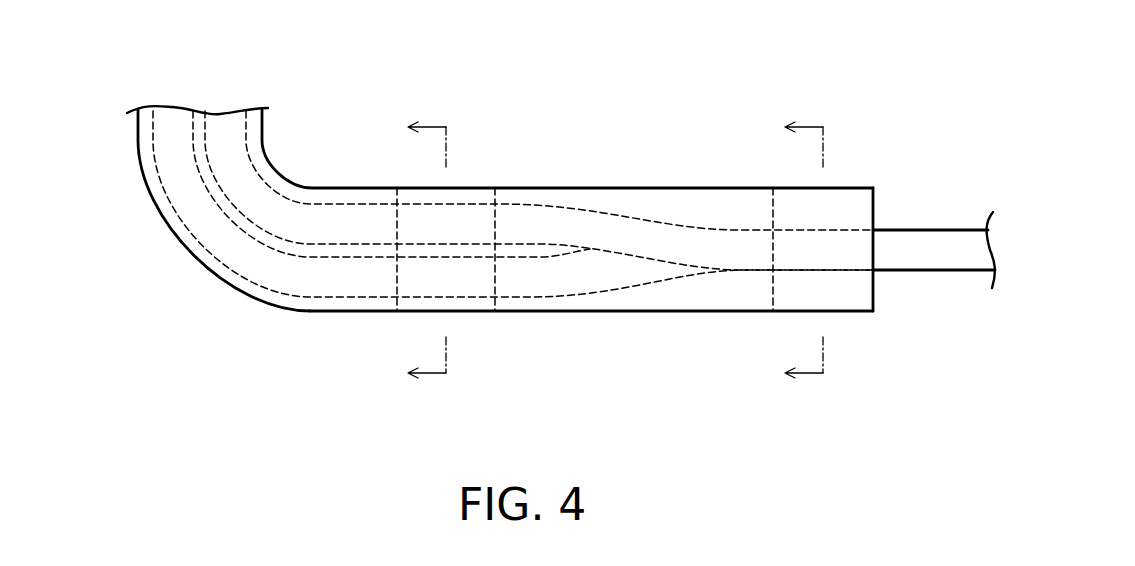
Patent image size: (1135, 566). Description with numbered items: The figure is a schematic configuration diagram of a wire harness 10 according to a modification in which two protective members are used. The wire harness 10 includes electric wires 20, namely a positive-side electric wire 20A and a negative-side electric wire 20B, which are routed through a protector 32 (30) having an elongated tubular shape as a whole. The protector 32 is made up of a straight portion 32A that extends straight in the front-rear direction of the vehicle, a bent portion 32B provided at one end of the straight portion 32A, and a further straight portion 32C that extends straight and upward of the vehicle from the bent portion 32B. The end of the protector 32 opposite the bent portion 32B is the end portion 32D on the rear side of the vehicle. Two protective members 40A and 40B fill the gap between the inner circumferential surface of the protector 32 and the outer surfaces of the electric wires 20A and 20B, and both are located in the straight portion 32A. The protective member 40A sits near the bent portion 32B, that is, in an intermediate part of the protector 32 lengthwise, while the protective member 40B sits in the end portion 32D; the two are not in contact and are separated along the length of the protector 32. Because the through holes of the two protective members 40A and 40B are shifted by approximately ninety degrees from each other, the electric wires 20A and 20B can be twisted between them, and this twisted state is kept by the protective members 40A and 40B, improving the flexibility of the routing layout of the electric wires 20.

The wire harness 10 is at (899, 60).
The electric wire 20 is at (940, 229).
The positive-side electric wire 20A is at (271, 182).
The negative-side electric wire 20B is at (221, 265).
The exterior member 30 is at (486, 226).
The protector 32 is at (537, 312).
The straight portion 32A is at (666, 312).
The bent portion 32B is at (249, 302).
The straight portion 32C is at (136, 125).
The end portion 32D is at (860, 187).
The protective member 40A is at (496, 218).
The protective member 40B is at (754, 208).